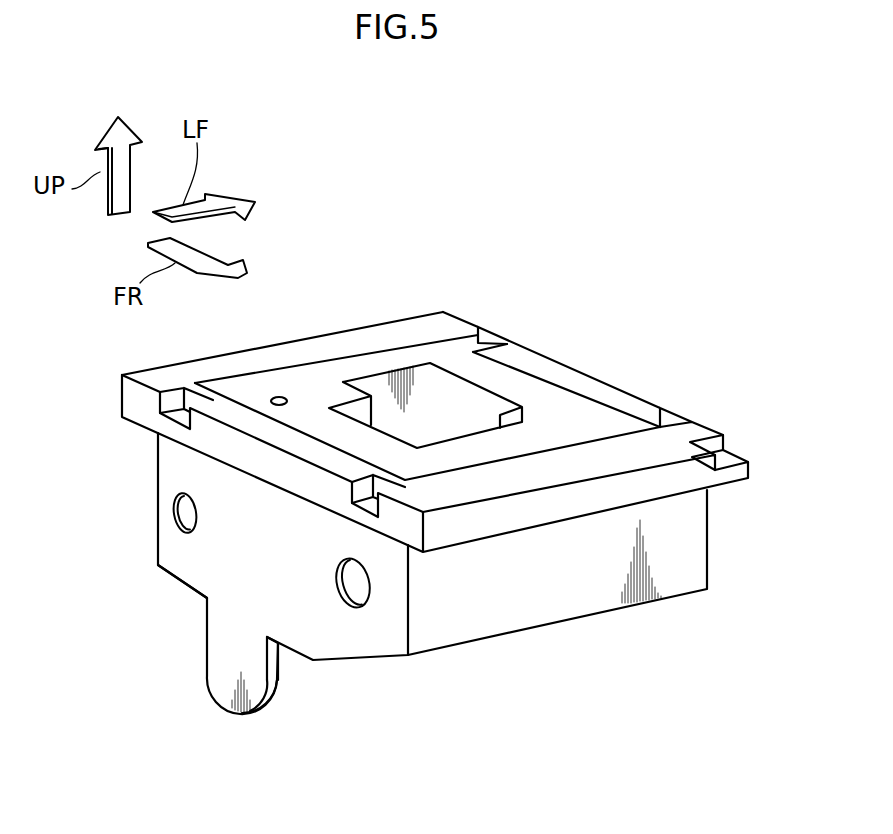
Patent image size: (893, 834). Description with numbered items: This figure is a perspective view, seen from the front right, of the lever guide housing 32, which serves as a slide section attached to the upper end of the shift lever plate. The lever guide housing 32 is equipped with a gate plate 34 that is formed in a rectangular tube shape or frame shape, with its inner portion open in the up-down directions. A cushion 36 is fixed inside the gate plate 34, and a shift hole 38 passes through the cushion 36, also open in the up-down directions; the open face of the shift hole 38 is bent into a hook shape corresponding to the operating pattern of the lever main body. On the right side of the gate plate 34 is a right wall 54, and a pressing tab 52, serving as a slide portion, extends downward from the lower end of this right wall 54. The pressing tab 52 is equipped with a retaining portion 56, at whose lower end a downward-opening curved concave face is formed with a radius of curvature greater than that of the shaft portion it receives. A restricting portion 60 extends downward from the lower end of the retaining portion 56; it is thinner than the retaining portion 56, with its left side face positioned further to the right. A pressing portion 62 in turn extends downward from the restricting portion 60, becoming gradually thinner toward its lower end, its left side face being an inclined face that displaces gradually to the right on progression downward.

The lever guide housing 32 is at (628, 334).
The gate plate 34 is at (558, 582).
The cushion 36 is at (561, 412).
The shift hole 38 is at (473, 407).
The pressing tab 52 is at (207, 627).
The right wall 54 is at (377, 643).
The retaining portion 56 is at (207, 604).
The restricting portion 60 is at (280, 653).
The pressing portion 62 is at (275, 692).